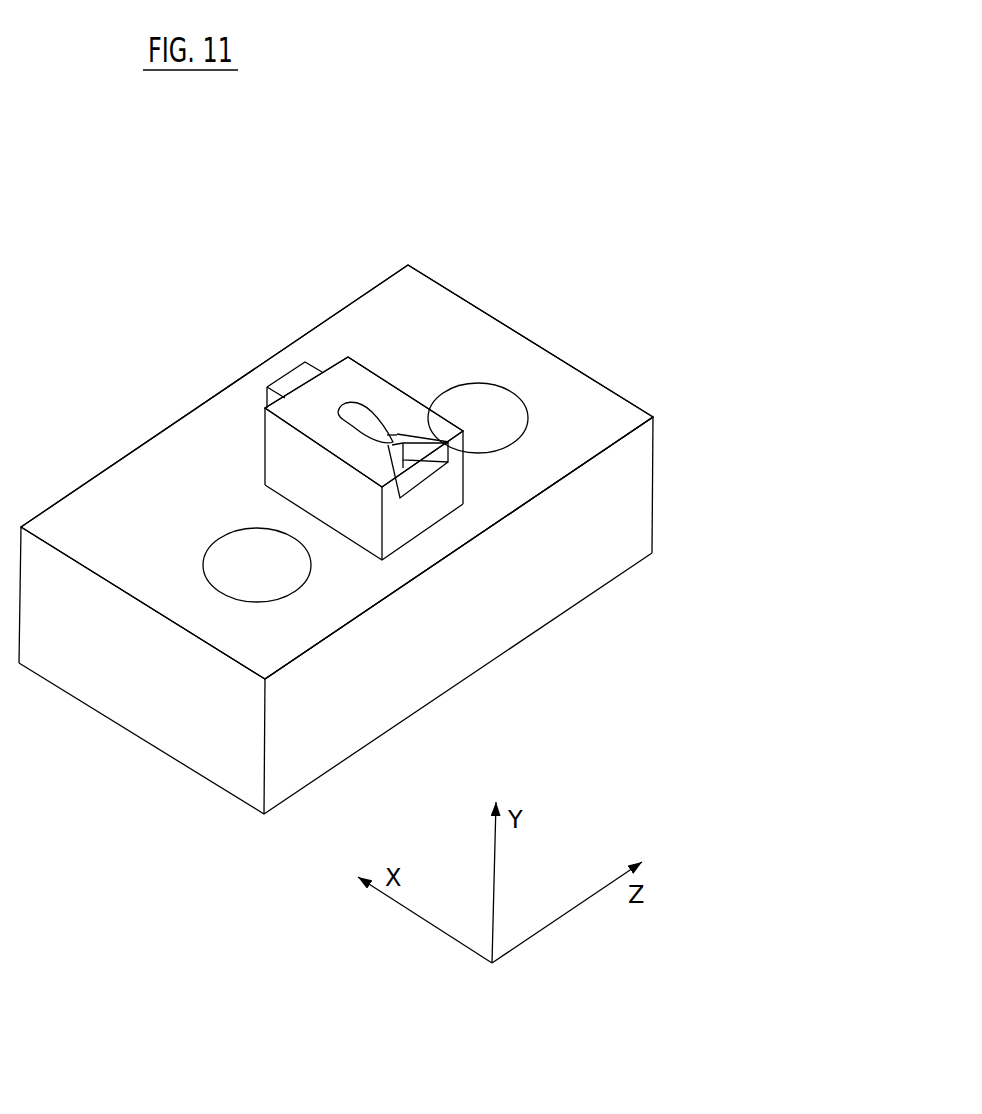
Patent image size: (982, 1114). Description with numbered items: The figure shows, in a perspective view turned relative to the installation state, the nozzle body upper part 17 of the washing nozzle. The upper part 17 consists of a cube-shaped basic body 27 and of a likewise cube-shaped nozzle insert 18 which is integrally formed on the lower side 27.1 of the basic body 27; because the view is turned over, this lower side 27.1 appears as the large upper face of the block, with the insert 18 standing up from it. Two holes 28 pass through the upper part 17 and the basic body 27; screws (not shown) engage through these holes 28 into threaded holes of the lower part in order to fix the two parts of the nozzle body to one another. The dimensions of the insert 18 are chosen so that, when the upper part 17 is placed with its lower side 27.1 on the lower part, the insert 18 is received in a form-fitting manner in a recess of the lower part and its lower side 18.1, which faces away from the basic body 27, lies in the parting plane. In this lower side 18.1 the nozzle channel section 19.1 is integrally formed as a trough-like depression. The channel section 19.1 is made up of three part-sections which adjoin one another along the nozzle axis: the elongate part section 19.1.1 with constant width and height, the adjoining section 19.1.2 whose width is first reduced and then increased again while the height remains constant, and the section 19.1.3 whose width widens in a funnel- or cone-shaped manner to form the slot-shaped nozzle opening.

The nozzle body upper part 17 is at (545, 313).
The basic body 27 is at (618, 385).
The lower side of the basic body 27.1 is at (602, 433).
The holes 28 is at (349, 511).
The nozzle insert 18 is at (369, 368).
The lower side of the insert 18.1 is at (369, 410).
The nozzle channel section 19.1 is at (360, 476).
The elongate part section 19.1.1 is at (280, 433).
The channel section with reduced width 19.1.2 is at (473, 411).
The funnel-shaped channel section 19.1.3 is at (482, 519).